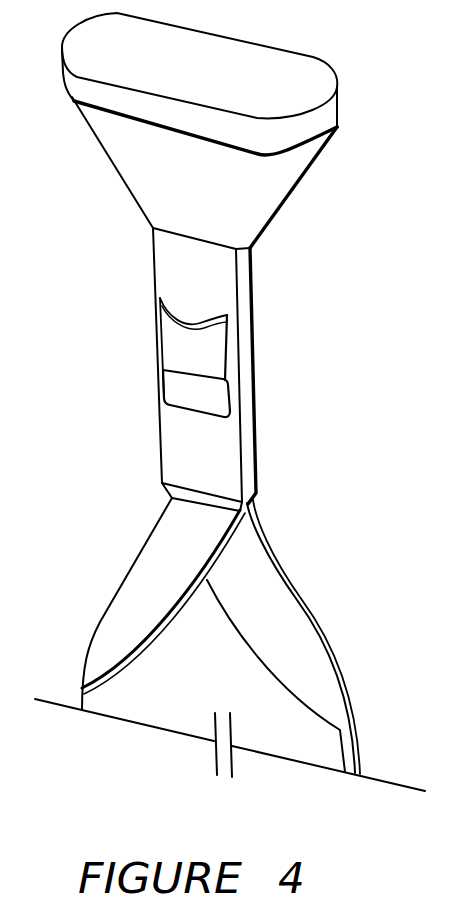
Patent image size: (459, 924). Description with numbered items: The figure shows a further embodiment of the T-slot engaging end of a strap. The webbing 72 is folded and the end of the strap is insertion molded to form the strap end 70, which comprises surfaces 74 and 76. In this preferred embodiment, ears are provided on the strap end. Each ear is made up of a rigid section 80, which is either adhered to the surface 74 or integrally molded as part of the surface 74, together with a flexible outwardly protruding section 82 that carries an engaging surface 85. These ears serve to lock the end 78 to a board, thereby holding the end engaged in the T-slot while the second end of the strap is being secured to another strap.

The strap end 70 is at (253, 413).
The webbing 72 is at (273, 618).
The surface 74 is at (168, 261).
The surface 76 is at (243, 286).
The end 78 is at (337, 85).
The rigid section 80 is at (158, 397).
The flexible outwardly protruding section 82 is at (173, 343).
The engaging surface 85 is at (227, 323).